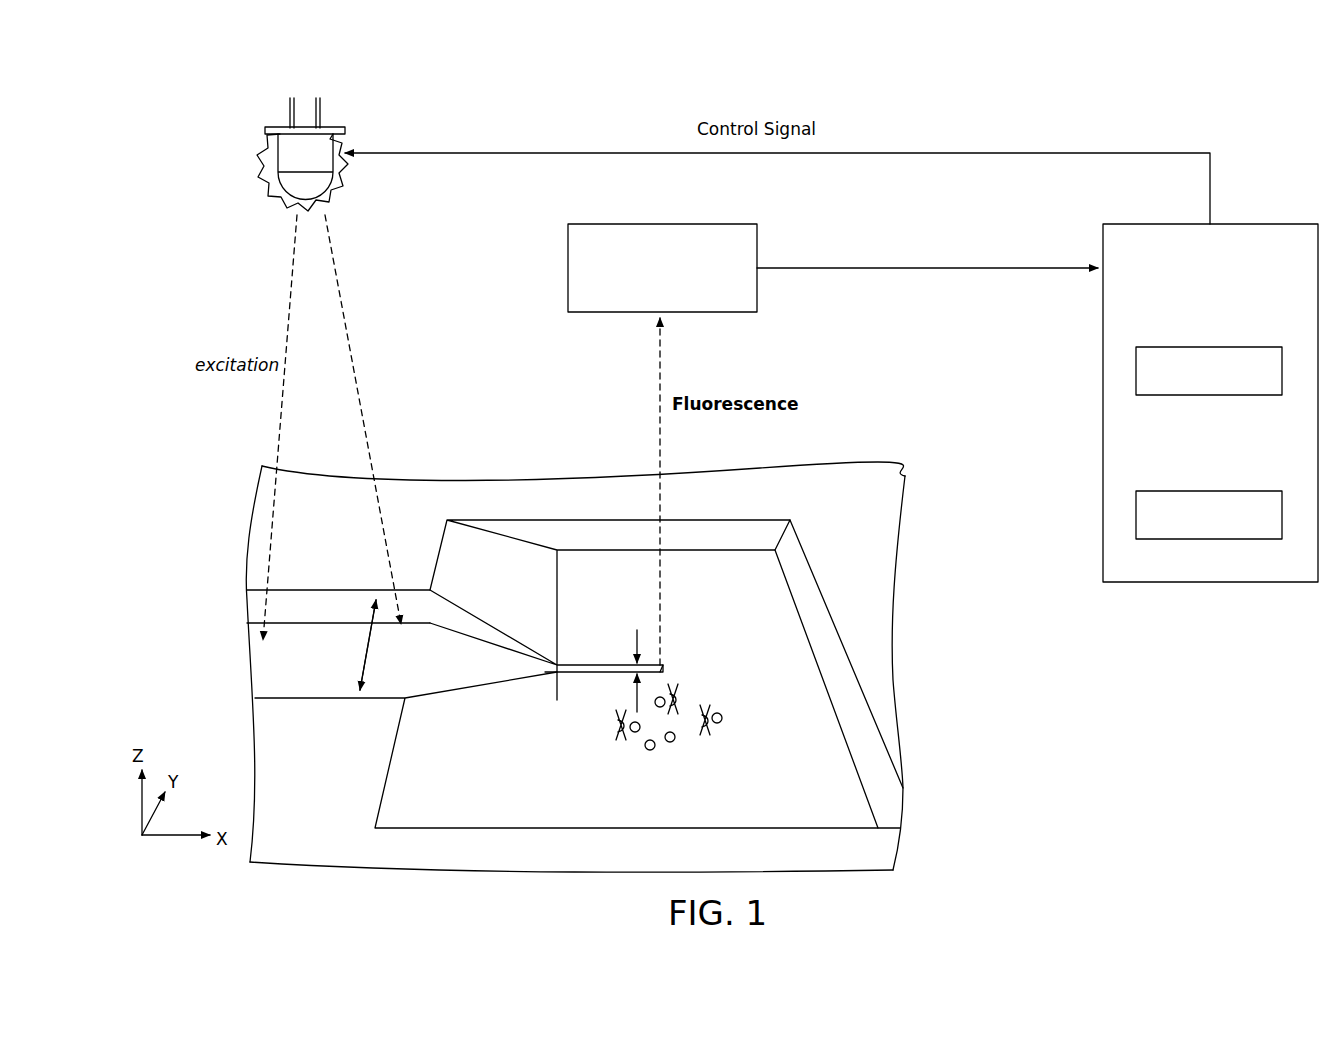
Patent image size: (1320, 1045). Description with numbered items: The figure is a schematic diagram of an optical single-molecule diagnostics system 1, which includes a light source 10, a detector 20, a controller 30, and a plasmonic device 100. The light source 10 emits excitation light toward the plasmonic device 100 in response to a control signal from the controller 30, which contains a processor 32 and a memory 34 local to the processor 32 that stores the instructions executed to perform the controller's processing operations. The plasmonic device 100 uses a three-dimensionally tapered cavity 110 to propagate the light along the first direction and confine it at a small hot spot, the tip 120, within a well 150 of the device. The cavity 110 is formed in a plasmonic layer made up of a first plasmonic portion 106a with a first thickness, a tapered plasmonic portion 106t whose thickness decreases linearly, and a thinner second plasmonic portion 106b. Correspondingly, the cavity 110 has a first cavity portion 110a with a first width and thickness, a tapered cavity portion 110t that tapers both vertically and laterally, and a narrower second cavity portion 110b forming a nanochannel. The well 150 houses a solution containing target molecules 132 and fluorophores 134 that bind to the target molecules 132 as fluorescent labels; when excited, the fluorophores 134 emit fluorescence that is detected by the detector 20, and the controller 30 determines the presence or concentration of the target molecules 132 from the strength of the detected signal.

The optical diagnostics system 1 is at (178, 100).
The light source 10 is at (347, 130).
The detector 20 is at (568, 270).
The controller 30 is at (1237, 222).
The processor 32 is at (1136, 372).
The memory 34 is at (1136, 515).
The plasmonic device 100 is at (930, 455).
The first plasmonic portion 106a is at (405, 515).
The tapered plasmonic portion 106t is at (537, 560).
The second plasmonic portion 106b is at (598, 622).
The cavity 110 is at (272, 680).
The first cavity portion 110a is at (340, 672).
The tapered cavity portion 110t is at (495, 668).
The second cavity portion 110b is at (605, 682).
The tip 120 is at (660, 637).
The well 150 is at (740, 600).
The target molecules 132 is at (707, 735).
The fluorophores 134 is at (648, 762).